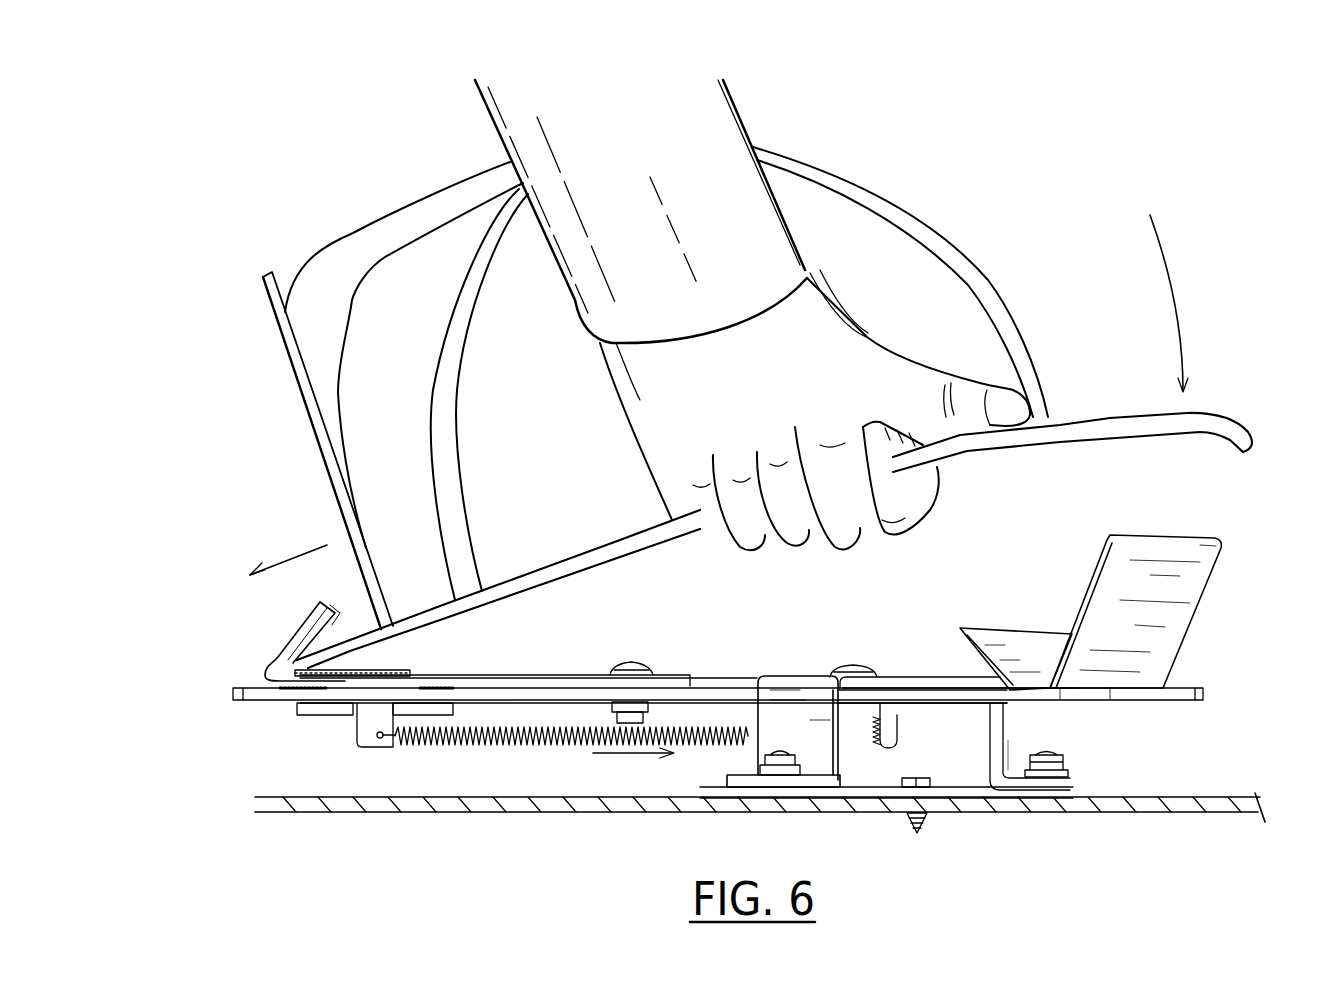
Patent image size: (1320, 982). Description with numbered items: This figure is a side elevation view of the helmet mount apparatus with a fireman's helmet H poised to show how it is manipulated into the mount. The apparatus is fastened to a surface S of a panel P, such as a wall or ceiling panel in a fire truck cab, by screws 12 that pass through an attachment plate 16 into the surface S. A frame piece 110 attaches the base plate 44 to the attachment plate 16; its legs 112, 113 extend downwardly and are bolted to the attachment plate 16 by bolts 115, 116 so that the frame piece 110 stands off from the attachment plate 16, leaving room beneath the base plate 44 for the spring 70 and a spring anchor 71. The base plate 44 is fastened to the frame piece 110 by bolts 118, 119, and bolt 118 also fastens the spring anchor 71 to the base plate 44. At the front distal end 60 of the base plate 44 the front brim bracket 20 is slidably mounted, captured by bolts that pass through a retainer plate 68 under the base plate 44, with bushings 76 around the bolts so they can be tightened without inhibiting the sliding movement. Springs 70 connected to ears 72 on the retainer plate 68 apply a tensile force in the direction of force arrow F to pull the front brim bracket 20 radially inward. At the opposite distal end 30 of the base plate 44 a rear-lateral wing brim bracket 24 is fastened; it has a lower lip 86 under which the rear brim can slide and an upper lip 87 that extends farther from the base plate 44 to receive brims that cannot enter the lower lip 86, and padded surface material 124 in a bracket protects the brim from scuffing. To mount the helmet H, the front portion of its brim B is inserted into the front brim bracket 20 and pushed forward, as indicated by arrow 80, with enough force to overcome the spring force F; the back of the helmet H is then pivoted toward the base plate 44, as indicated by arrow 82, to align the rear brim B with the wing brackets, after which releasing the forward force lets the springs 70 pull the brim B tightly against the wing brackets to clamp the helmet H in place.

The screw 12 is at (927, 822).
The attachment plate 16 is at (1003, 812).
The front brim bracket 20 is at (293, 633).
The rear-lateral wing brim bracket 24 is at (1197, 608).
The distal end 30 is at (1205, 698).
The base plate 44 is at (917, 707).
The front distal end 60 is at (233, 693).
The retainer plate 68 is at (338, 723).
The spring 70 is at (535, 745).
The spring anchor 71 is at (897, 730).
The ear 72 is at (355, 745).
The bushing 76 is at (440, 703).
The arrow 80 is at (293, 555).
The arrow 82 is at (1178, 300).
The lower lip 86 is at (993, 630).
The upper lip 87 is at (1203, 533).
The frame piece 110 is at (897, 678).
The leg 112 is at (1007, 730).
The leg 113 is at (843, 783).
The bolt 115 is at (1050, 748).
The bolt 116 is at (757, 762).
The bolt 118 is at (867, 665).
The bolt 119 is at (638, 662).
The padded surface material 124 is at (367, 670).
The fireman's helmet H is at (881, 183).
The brim B is at (558, 551).
The force arrow F is at (630, 755).
The panel P is at (294, 786).
The surface S is at (1158, 800).